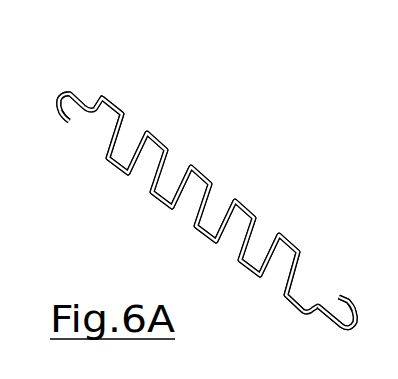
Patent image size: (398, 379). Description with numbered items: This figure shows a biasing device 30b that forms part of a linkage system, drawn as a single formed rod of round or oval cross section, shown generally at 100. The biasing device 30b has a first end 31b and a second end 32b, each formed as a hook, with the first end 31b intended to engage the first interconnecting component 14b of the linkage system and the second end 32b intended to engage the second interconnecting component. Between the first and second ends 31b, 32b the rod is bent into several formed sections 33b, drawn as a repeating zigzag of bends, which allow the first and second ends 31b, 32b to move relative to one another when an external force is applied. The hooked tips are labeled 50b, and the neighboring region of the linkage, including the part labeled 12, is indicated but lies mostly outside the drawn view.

The retention device assembly 100 is at (210, 57).
The biasing device 30b is at (154, 209).
The first end 31b is at (57, 86).
The second end 32b is at (358, 333).
The formed sections 33b is at (122, 105).
The free tip 50b is at (67, 120).
The first interconnecting component 14b is at (383, 51).
The housing 12 is at (389, 171).